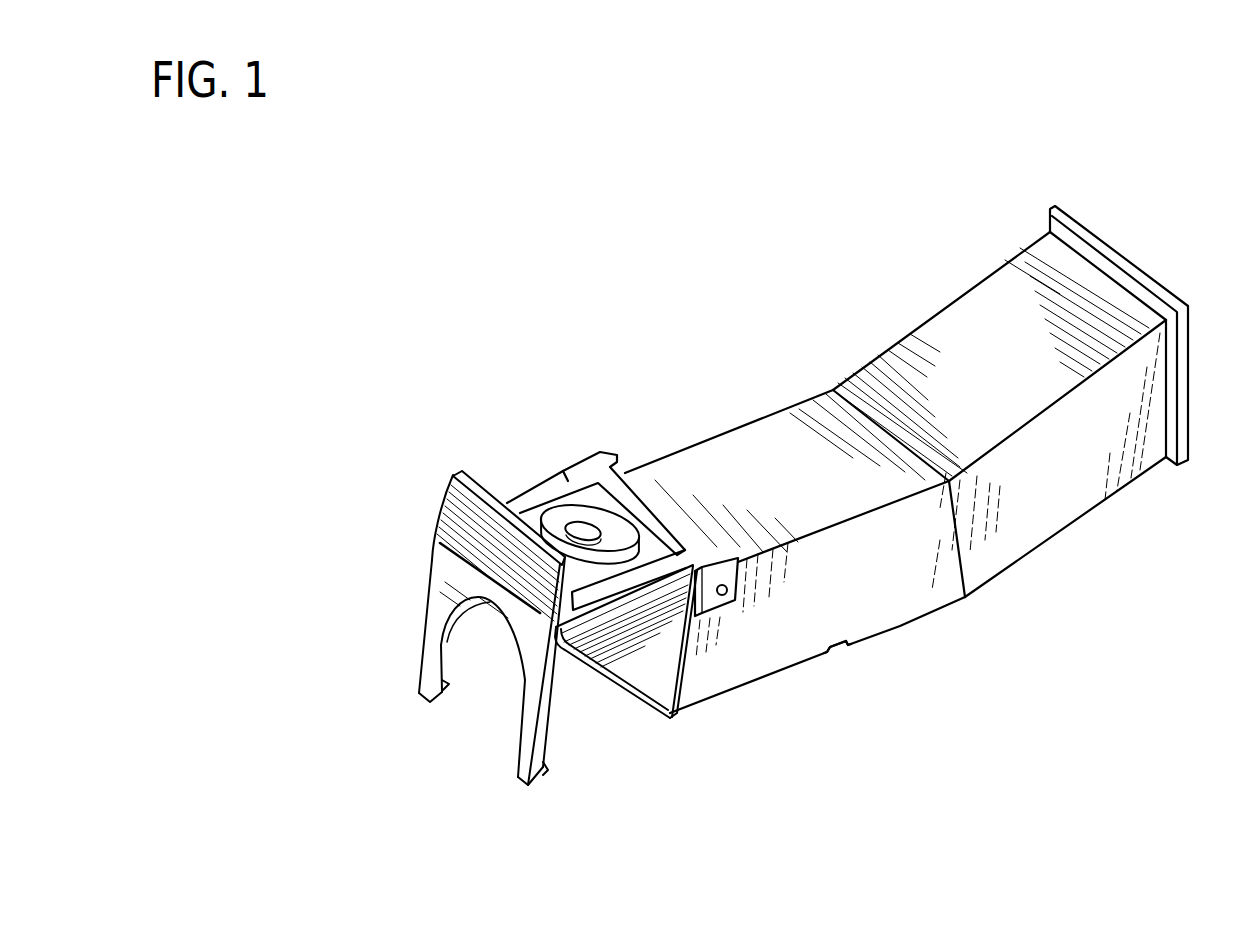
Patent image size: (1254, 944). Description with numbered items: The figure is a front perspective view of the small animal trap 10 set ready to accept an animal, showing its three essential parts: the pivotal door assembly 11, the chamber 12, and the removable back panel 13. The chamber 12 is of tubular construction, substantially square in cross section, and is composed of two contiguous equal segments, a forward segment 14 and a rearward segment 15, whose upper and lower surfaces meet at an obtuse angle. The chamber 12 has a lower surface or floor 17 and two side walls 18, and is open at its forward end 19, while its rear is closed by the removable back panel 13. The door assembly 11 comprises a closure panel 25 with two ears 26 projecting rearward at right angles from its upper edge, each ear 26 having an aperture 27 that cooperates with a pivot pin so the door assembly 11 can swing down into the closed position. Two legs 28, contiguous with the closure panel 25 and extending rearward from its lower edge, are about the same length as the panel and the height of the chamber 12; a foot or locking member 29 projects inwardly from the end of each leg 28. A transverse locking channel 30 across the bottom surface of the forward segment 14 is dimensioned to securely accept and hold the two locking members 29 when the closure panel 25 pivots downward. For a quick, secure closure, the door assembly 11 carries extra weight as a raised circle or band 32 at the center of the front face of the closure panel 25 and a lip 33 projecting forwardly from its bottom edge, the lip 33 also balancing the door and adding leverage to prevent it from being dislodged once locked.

The small animal trap 10 is at (802, 301).
The pivotal door assembly 11 is at (456, 605).
The chamber 12 is at (983, 573).
The removable back panel 13 is at (1110, 253).
The forward segment 14 is at (885, 625).
The rearward segment 15 is at (1063, 517).
The lower surface or floor 17 is at (626, 704).
The side walls 18 is at (928, 562).
The forward end 19 is at (667, 710).
The closure panel 25 is at (528, 492).
The ears 26 is at (663, 561).
The aperture 27 is at (730, 591).
The legs 28 is at (437, 621).
The foot or locking member 29 is at (445, 681).
The transverse locking channel 30 is at (837, 648).
The raised circle or band 32 is at (577, 517).
The lip 33 is at (498, 547).